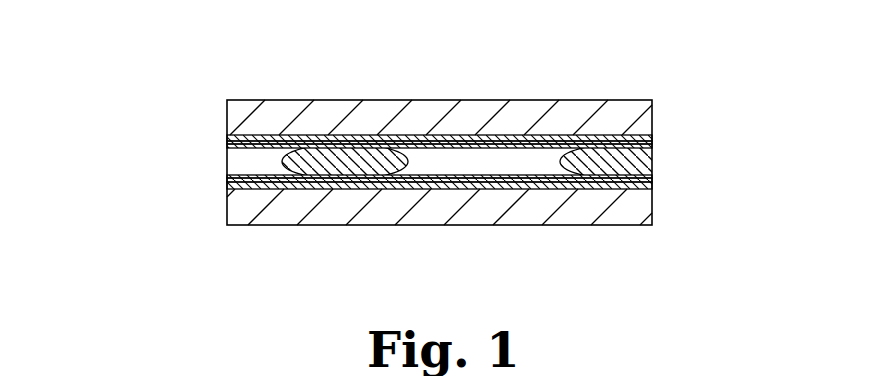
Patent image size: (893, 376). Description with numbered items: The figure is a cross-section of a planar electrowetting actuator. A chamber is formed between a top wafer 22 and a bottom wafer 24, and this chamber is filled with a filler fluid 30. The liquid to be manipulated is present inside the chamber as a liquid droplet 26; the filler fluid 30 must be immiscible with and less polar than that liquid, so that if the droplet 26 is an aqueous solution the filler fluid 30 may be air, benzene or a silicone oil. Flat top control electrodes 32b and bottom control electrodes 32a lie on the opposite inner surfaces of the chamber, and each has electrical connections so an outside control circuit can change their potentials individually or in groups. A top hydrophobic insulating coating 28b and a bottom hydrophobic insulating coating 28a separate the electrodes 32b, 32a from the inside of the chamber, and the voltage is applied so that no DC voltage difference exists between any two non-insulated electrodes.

The top wafer 22 is at (344, 76).
The bottom wafer 24 is at (525, 243).
The liquid droplet 26 is at (652, 167).
The bottom hydrophobic insulating coating 28a is at (343, 231).
The top hydrophobic insulating coating 28b is at (534, 86).
The filler fluid 30 is at (227, 160).
The bottom control electrodes 32a is at (439, 238).
The top control electrodes 32b is at (439, 79).